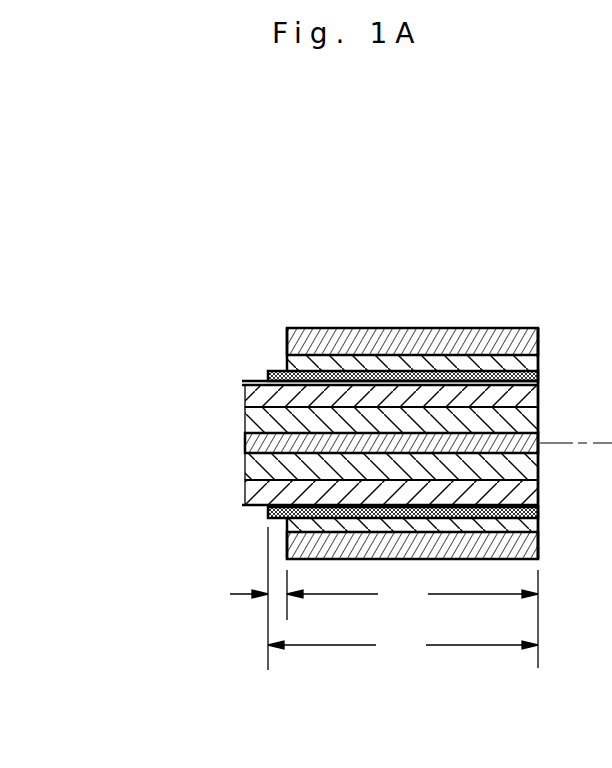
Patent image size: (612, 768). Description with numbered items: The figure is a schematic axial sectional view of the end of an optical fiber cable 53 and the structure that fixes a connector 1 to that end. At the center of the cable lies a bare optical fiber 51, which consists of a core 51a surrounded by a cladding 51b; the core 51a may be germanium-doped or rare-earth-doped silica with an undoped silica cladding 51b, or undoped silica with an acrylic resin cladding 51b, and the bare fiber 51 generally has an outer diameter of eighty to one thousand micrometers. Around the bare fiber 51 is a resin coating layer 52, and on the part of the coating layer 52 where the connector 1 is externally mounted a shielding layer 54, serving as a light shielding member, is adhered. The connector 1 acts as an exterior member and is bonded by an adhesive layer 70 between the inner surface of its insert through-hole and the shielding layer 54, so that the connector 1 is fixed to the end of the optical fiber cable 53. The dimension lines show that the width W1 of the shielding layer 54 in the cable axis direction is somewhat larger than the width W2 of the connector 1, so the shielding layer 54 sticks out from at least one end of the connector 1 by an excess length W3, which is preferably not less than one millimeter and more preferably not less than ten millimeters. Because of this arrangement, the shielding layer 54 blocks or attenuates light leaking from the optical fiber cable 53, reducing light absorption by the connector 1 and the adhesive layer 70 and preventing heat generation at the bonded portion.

The connector 1 is at (352, 328).
The bare optical fiber 51 is at (210, 300).
The core 51a is at (247, 443).
The cladding 51b is at (248, 422).
The resin coating layer 52 is at (253, 381).
The optical fiber cable 53 is at (255, 378).
The shielding layer 54 is at (488, 350).
The adhesive layer 70 is at (442, 371).
The width of the shielding layer W1 is at (403, 598).
The width of the connector W2 is at (412, 619).
The excess length of the shielding layer W3 is at (278, 597).